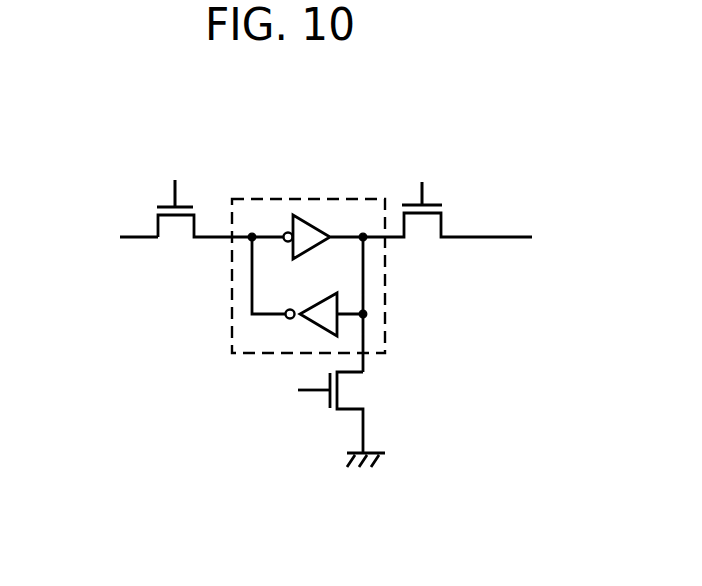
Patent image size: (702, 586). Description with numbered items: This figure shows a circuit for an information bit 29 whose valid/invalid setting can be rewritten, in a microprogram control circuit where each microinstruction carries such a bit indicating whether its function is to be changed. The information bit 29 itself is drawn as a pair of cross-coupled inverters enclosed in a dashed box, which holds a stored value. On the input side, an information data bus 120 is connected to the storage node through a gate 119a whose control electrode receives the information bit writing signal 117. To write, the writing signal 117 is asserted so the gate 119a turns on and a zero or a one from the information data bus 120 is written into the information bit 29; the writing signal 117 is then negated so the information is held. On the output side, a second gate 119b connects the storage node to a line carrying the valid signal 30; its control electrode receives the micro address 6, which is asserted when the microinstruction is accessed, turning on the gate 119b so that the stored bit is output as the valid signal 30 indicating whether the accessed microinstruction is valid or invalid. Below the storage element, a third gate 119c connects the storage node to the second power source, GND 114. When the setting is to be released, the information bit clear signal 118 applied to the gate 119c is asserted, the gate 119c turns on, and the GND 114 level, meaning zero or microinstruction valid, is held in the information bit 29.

The information data bus 120 is at (122, 236).
The information bit writing signal 117 is at (182, 186).
The gate 119a is at (172, 238).
The information bit 29 is at (283, 197).
The micro address 6 is at (432, 191).
The gate 119b is at (425, 238).
The valid signal 30 is at (485, 232).
The gate 119c is at (362, 393).
The information bit clear signal 118 is at (310, 400).
The second power source (GND) 114 is at (383, 448).